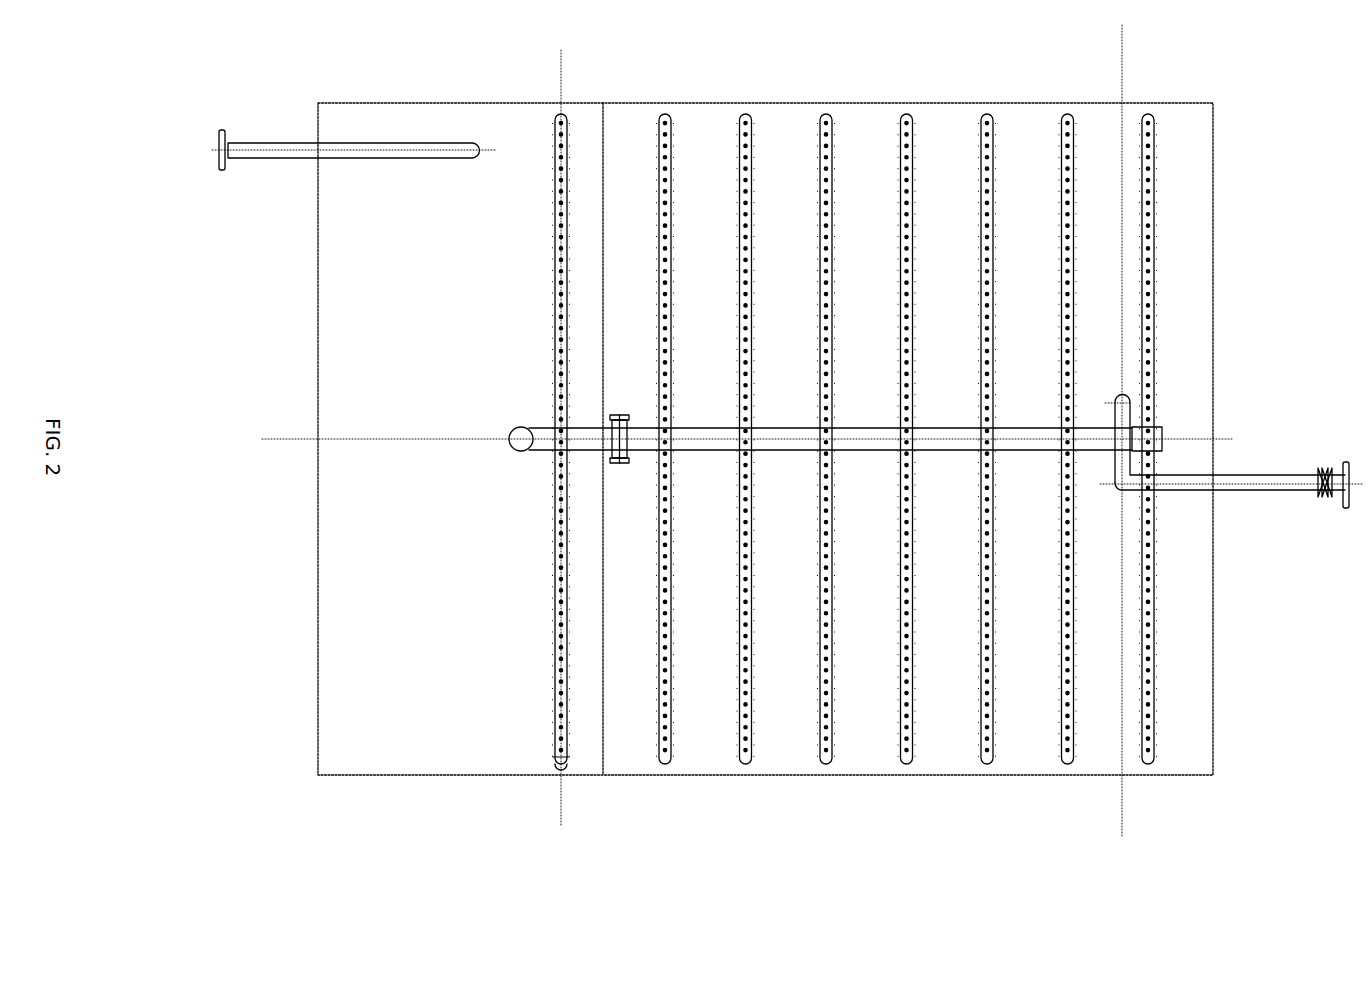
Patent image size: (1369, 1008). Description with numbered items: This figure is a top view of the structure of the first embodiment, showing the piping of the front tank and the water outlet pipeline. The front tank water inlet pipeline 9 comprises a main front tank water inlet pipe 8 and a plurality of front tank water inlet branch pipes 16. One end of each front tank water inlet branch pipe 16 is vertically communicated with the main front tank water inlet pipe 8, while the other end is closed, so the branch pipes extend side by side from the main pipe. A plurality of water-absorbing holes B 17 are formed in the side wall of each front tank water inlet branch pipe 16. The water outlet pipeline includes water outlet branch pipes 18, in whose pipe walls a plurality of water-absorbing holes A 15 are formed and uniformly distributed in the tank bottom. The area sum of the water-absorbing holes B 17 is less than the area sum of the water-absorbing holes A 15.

The main front tank water inlet pipe 8 is at (588, 451).
The front tank water inlet pipeline 9 is at (270, 152).
The water-absorbing hole A 15 is at (1146, 762).
The front tank water inlet branch pipe 16 is at (562, 762).
The water-absorbing hole B 17 is at (560, 762).
The water outlet branch pipe 18 is at (1154, 762).